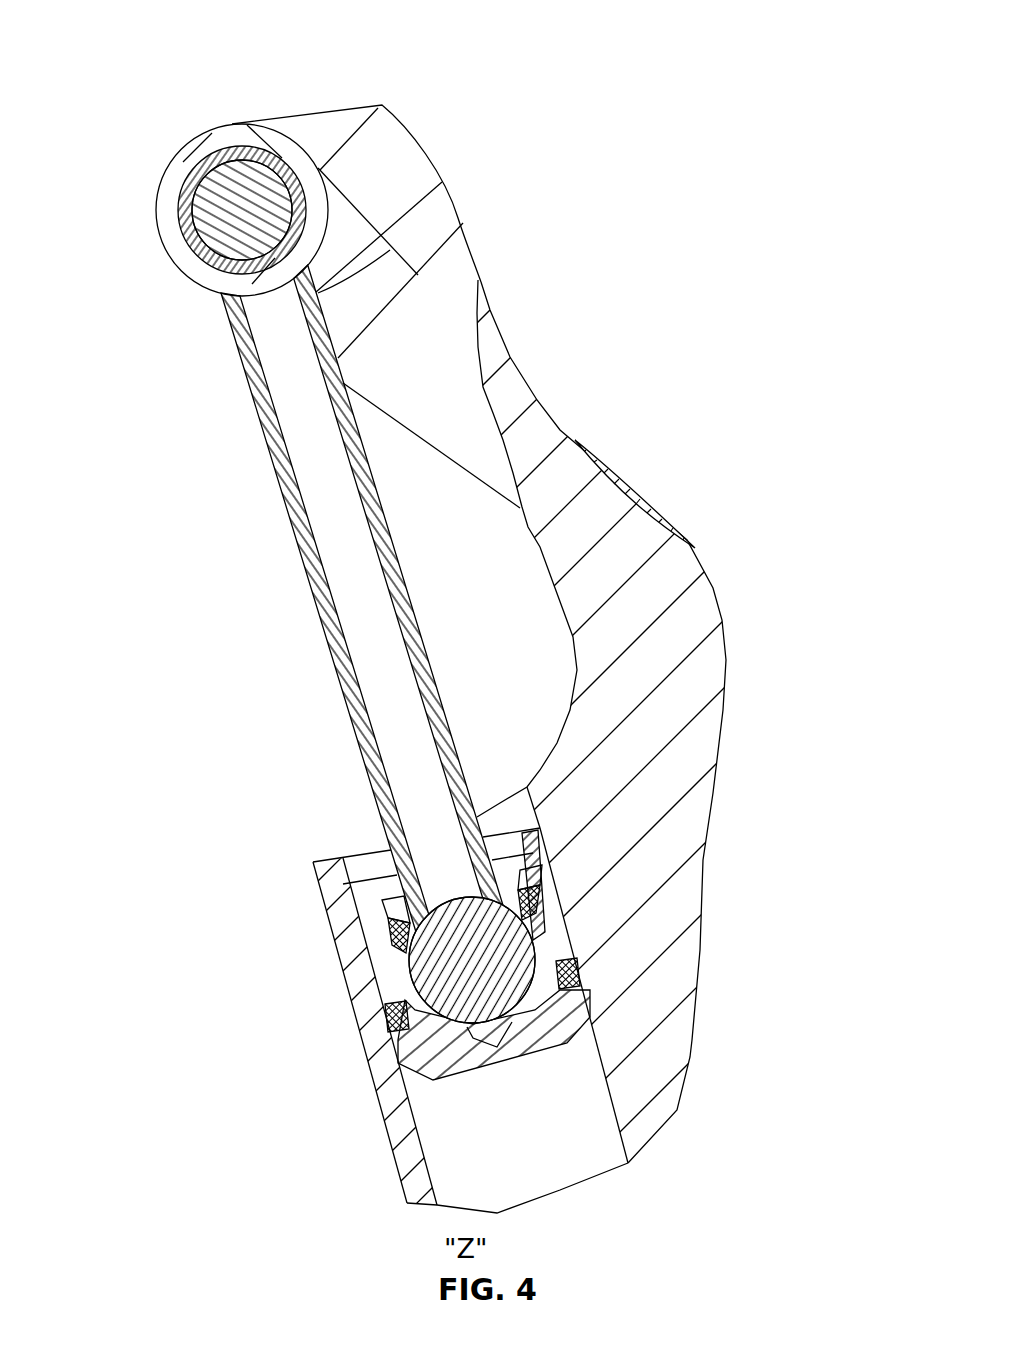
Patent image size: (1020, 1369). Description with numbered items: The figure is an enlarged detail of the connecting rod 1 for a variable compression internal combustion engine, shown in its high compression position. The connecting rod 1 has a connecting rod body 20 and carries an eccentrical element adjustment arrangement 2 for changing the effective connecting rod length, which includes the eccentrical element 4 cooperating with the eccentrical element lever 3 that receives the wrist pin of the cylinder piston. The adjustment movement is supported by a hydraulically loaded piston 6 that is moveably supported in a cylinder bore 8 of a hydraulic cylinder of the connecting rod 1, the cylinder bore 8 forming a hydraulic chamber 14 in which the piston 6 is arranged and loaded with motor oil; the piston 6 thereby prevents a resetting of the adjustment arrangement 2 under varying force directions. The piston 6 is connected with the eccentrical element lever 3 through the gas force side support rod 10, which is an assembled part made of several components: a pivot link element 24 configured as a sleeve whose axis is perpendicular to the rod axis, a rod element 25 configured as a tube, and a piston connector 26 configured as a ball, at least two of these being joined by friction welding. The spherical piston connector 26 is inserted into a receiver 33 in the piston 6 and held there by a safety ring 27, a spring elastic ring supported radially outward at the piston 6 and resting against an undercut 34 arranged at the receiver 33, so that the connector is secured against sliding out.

The connecting rod 1 is at (673, 173).
The eccentrical element adjustment arrangement 2 is at (529, 194).
The eccentrical element lever 3 is at (331, 132).
The eccentrical element 4 is at (635, 470).
The piston 6 is at (517, 1076).
The cylinder bore 8 is at (417, 1113).
The support rod 10 is at (262, 447).
The hydraulic chamber 14 is at (495, 1148).
The connecting rod body 20 is at (707, 613).
The pivot link element 24 is at (167, 207).
The rod element 25 is at (330, 653).
The piston connector 26 is at (520, 1010).
The safety ring 27 is at (387, 942).
The receiver 33 is at (387, 977).
The undercut 34 is at (387, 920).